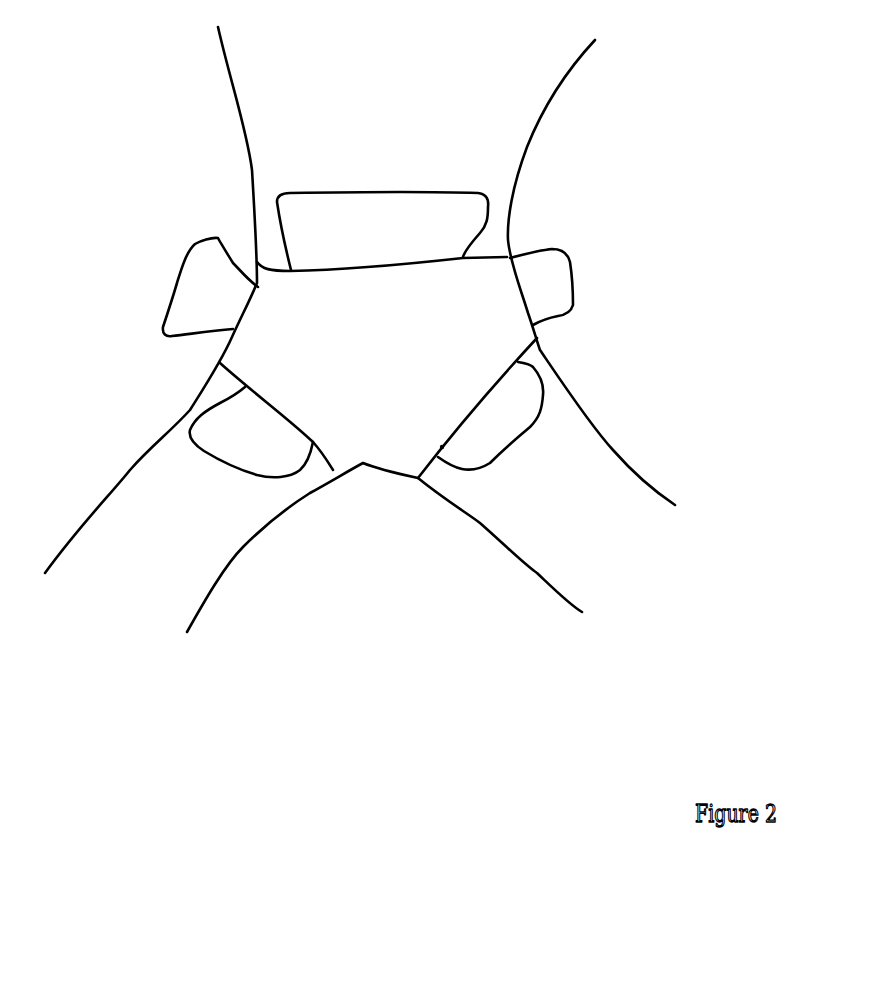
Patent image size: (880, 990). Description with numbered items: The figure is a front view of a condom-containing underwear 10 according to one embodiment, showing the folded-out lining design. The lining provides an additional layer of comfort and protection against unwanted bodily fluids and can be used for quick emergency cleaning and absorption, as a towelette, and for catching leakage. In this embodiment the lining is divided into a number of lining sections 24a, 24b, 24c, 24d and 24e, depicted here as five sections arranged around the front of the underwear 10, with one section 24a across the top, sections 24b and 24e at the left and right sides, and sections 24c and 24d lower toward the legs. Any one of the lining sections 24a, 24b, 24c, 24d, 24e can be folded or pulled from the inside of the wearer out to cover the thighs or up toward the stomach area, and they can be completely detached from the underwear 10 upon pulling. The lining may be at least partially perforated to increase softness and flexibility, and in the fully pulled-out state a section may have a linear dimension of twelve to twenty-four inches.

The underwear 10 is at (447, 306).
The lining section 24a is at (407, 243).
The lining section 24b is at (222, 300).
The lining section 24c is at (258, 436).
The lining section 24d is at (507, 435).
The lining section 24e is at (565, 290).